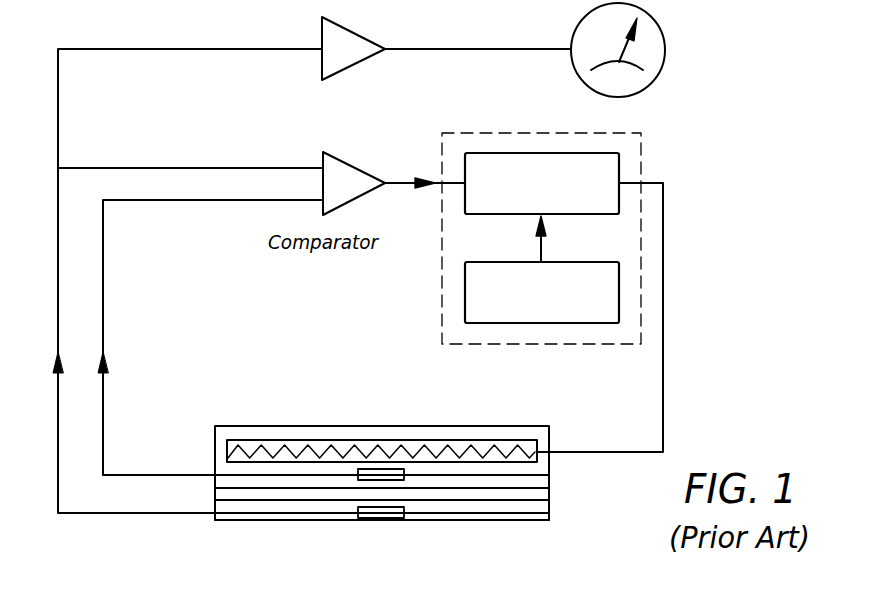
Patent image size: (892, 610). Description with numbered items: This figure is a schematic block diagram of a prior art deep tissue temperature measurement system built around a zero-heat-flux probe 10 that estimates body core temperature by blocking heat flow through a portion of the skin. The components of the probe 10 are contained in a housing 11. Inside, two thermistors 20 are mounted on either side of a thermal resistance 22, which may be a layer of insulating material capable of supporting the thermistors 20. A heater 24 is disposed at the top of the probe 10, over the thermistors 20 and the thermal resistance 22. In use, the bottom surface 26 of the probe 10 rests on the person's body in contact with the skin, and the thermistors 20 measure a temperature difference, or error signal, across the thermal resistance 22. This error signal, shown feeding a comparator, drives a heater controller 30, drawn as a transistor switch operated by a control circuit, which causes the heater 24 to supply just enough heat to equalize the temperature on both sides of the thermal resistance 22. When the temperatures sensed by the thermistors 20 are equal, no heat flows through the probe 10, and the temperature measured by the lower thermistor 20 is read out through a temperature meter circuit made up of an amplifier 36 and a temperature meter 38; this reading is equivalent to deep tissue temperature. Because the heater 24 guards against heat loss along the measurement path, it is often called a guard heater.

The probe 10 is at (374, 424).
The housing 11 is at (549, 478).
The thermistors 20 is at (394, 476).
The thermal resistance 22 is at (333, 502).
The heater 24 is at (470, 440).
The bottom surface 26 is at (225, 520).
The heater controller 30 is at (641, 172).
The amplifier 36 is at (348, 28).
The temperature meter 38 is at (666, 49).